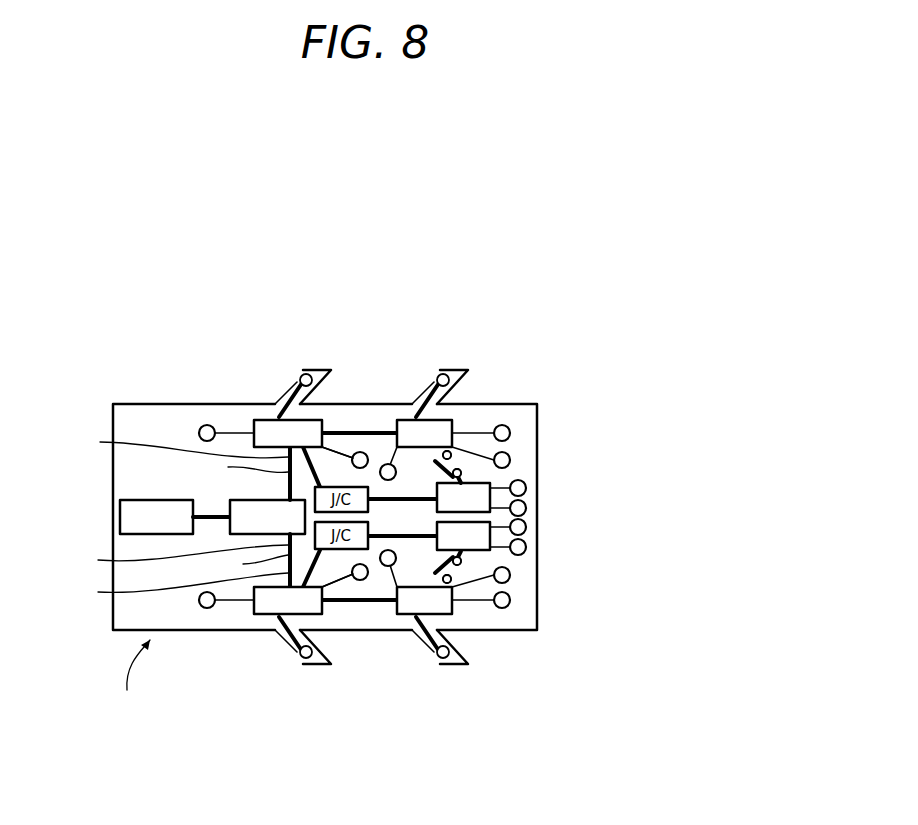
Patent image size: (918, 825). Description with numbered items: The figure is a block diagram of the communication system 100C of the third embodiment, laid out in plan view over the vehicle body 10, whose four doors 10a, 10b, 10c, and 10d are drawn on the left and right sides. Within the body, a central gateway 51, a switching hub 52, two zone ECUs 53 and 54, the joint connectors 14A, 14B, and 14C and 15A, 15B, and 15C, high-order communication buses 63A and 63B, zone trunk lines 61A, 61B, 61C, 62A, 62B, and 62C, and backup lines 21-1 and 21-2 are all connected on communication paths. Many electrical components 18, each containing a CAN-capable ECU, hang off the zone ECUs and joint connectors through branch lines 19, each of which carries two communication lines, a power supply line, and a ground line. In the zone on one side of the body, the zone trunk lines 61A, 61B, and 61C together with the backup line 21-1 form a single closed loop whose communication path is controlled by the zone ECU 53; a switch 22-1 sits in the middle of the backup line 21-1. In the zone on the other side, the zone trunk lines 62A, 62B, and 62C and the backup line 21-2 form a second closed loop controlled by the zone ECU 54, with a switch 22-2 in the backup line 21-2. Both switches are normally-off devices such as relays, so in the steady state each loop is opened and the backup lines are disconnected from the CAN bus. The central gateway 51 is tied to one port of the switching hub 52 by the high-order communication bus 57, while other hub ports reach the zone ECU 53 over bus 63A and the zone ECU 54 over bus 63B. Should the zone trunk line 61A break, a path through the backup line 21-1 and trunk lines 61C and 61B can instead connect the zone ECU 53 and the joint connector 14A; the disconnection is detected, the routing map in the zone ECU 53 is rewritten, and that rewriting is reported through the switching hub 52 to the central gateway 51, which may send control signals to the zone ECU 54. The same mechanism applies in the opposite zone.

The vehicle body 10 is at (165, 404).
The door 10a is at (316, 368).
The door 10b is at (316, 666).
The door 10c is at (455, 368).
The door 10d is at (455, 666).
The joint connector 14A is at (448, 418).
The joint connector 14B is at (282, 500).
The joint connector 14C is at (497, 490).
The joint connector 15A is at (445, 640).
The joint connector 15B is at (174, 555).
The joint connector 15C is at (495, 545).
The electrical component 18 is at (205, 425).
The branch line 19 is at (237, 432).
The backup line 21-1 is at (465, 480).
The backup line 21-2 is at (465, 553).
The switch 22-1 is at (458, 458).
The switch 22-2 is at (458, 576).
The central gateway 51 is at (120, 516).
The switching hub 52 is at (228, 527).
The zone ECU 53 is at (266, 420).
The zone ECU 54 is at (266, 613).
The high-order communication bus 57 is at (216, 512).
The zone trunk line 61A is at (355, 454).
The zone trunk line 61B is at (240, 469).
The zone trunk line 61C is at (428, 467).
The zone trunk line 62A is at (386, 625).
The zone trunk line 62B is at (247, 566).
The zone trunk line 62C is at (428, 567).
The high-order communication bus 63A is at (175, 444).
The high-order communication bus 63B is at (174, 587).
The communication system 100C is at (122, 678).